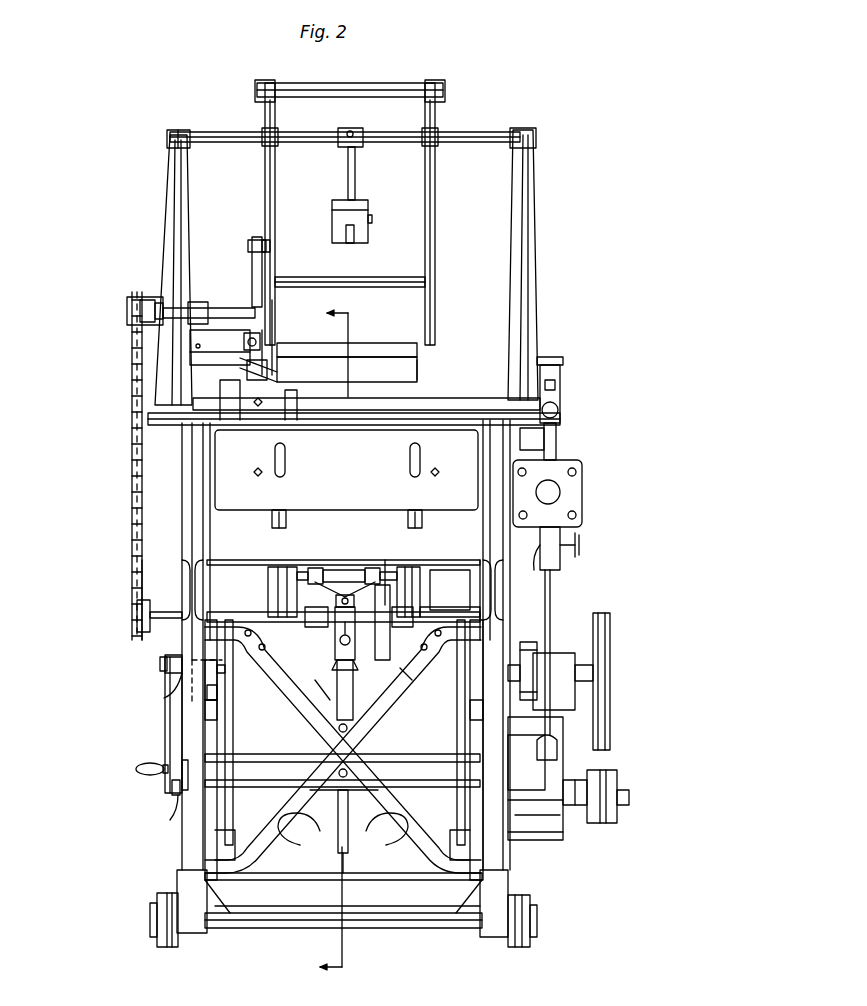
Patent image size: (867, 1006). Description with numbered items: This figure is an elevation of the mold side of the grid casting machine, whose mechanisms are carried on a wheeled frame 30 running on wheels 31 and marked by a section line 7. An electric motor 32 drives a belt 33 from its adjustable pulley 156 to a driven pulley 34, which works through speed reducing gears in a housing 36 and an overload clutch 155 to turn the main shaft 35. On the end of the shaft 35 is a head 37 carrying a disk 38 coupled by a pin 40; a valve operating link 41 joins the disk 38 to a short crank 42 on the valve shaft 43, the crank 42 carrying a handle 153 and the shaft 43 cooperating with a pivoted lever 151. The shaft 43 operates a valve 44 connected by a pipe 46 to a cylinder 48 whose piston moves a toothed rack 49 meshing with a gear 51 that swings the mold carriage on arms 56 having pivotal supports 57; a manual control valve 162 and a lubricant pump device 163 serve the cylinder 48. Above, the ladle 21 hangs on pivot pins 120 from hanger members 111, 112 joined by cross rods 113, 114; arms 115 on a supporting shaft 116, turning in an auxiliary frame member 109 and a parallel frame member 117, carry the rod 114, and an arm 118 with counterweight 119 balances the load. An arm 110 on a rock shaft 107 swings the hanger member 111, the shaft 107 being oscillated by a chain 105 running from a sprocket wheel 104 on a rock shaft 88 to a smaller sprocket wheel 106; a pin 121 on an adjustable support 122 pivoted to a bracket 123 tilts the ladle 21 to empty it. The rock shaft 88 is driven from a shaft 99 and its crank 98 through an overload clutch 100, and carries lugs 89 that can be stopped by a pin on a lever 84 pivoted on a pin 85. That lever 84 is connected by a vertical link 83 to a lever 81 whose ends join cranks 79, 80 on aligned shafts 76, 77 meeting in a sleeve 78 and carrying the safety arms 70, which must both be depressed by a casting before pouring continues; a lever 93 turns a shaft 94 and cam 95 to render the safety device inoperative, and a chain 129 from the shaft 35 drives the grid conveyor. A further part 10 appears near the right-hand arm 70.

The section line 7 is at (322, 643).
The bracket 10 is at (420, 590).
The ladle 21 is at (417, 370).
The frame 30 is at (183, 548).
The wheels 31 is at (160, 895).
The electric motor 32 is at (556, 838).
The belt 33 is at (603, 758).
The pulley 34 is at (610, 672).
The shaft 35 is at (217, 675).
The housing 36 is at (555, 660).
The head 37 is at (165, 700).
The disk 38 is at (172, 655).
The pin 40 is at (160, 664).
The valve operating link 41 is at (165, 730).
The short crank 42 is at (170, 795).
The valve shaft 43 is at (238, 762).
The valve 44 is at (545, 770).
The pipe 46 is at (550, 600).
The cylinder 48 is at (582, 490).
The toothed rack 49 is at (560, 500).
The gear 51 is at (575, 468).
The arms 56 is at (231, 735).
The pivotal supports 57 is at (378, 873).
The arms 70 is at (268, 607).
The shaft 76 is at (390, 572).
The shaft 77 is at (300, 572).
The sleeve 78 is at (340, 570).
The crank 79 is at (372, 568).
The crank 80 is at (315, 568).
The lever 81 is at (335, 592).
The link 83 is at (354, 600).
The lever 84 is at (353, 678).
The pin 85 is at (412, 680).
The rock shaft 88 is at (160, 610).
The lugs 89 is at (335, 640).
The lever 93 is at (202, 693).
The shaft 94 is at (398, 700).
The cam 95 is at (330, 690).
The crank 98 is at (482, 592).
The shaft 99 is at (472, 612).
The overload clutch 100 is at (385, 560).
The sprocket wheel 104 is at (145, 600).
The chain 105 is at (132, 470).
The sprocket wheel 106 is at (150, 296).
The rock shaft 107 is at (237, 296).
The auxiliary frame member 109 is at (170, 232).
The arm 110 is at (252, 272).
The hanger member 111 is at (265, 192).
The hanger member 112 is at (435, 221).
The cross rod 113 is at (345, 285).
The cross rod 114 is at (355, 88).
The arms 115 is at (268, 113).
The supporting shaft 116 is at (290, 134).
The frame member 117 is at (530, 243).
The arm 118 is at (348, 178).
The counterweight 119 is at (333, 218).
The pivot pins 120 is at (277, 352).
The pin 121 is at (280, 372).
The adjustable support 122 is at (260, 336).
The bracket 123 is at (215, 345).
The chain 129 is at (217, 695).
The lever 151 is at (172, 818).
The handle 153 is at (136, 769).
The overload clutch 155 is at (527, 642).
The pulley 156 is at (610, 822).
The manual control valve 162 is at (580, 545).
The pump device 163 is at (562, 392).